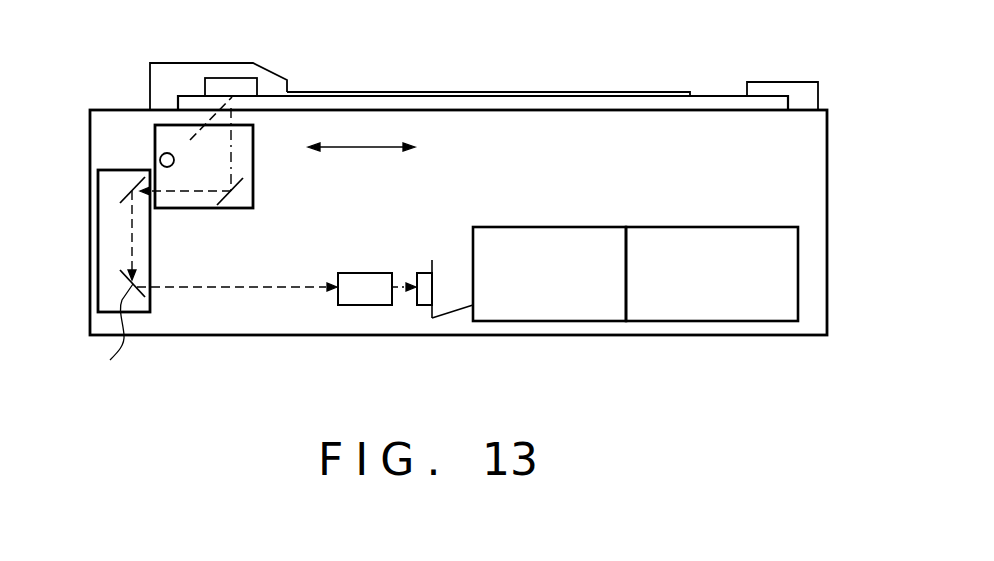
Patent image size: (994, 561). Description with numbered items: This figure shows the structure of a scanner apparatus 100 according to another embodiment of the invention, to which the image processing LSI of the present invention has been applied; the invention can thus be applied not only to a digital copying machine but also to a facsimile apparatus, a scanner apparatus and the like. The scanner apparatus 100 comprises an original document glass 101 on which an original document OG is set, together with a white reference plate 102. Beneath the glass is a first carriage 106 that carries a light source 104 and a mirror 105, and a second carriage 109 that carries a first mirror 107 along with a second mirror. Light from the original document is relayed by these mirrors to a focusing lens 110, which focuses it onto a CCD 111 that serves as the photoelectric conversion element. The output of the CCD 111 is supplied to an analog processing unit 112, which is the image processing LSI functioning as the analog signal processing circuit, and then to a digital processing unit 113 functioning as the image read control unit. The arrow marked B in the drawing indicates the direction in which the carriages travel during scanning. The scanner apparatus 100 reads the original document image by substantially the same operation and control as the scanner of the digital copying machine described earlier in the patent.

The scanner apparatus 100 is at (190, 337).
The original document glass 101 is at (552, 107).
The original document OG is at (400, 92).
The white reference plate 102 is at (242, 88).
The light source 104 is at (164, 153).
The mirror 105 is at (237, 182).
The first carriage 106 is at (187, 125).
The first mirror 107 is at (127, 195).
The second carriage 109 is at (113, 237).
The focusing lens 110 is at (360, 272).
The CCD 111 is at (423, 272).
The analog processing unit 112 is at (542, 322).
The digital processing unit 113 is at (738, 323).
The scanning direction B is at (361, 136).